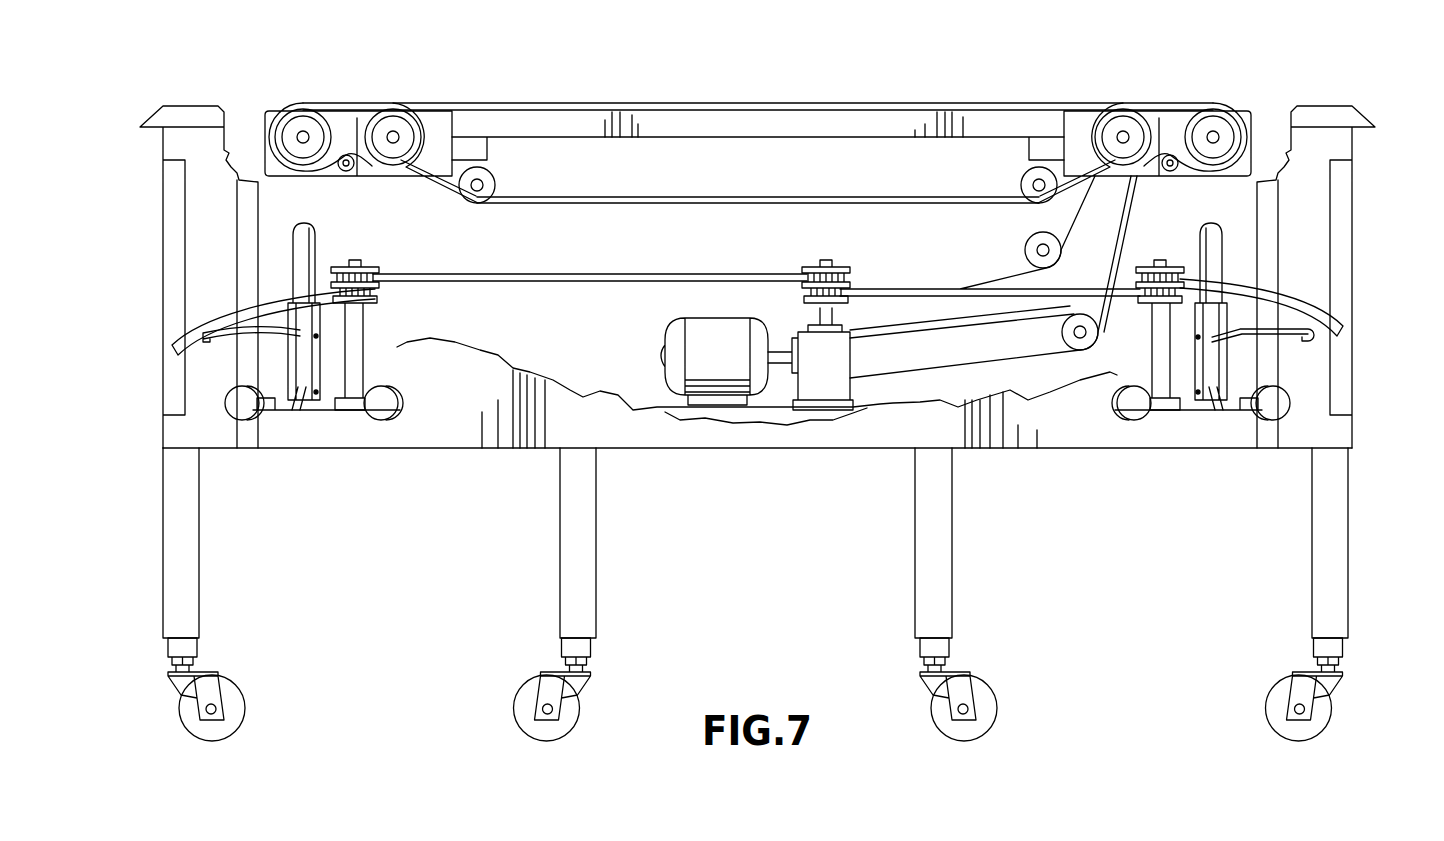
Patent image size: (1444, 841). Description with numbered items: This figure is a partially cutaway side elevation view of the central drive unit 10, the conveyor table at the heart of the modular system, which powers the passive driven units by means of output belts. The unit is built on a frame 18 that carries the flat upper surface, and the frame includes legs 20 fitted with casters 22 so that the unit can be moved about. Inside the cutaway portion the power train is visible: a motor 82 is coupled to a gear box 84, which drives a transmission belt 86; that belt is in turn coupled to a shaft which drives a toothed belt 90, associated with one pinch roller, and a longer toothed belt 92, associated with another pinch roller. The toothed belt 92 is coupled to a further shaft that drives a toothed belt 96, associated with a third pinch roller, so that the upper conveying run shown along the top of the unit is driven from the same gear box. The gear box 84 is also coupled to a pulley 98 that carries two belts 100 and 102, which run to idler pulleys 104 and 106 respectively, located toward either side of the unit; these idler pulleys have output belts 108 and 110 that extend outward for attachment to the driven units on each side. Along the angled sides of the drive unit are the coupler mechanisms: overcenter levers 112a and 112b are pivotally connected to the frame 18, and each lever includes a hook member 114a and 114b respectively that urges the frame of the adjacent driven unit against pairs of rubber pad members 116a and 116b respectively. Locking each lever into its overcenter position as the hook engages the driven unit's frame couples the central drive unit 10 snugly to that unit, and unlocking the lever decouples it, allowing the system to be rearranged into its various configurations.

The central drive unit 10 is at (1302, 72).
The frame 18 is at (1353, 445).
The legs 20 is at (199, 585).
The casters 22 is at (245, 712).
The motor 82 is at (708, 318).
The gear box 84 is at (842, 352).
The transmission belt 86 is at (960, 358).
The toothed belt 90 is at (1178, 102).
The toothed belt 92 is at (738, 102).
The toothed belt 96 is at (345, 103).
The pulley 98 is at (813, 272).
The belt 100 is at (945, 289).
The belt 102 is at (580, 273).
The idler pulley 104 is at (1141, 267).
The idler pulley 106 is at (372, 270).
The output belt 108 is at (1294, 322).
The output belt 110 is at (212, 320).
The overcenter lever 112a is at (1223, 257).
The overcenter lever 112b is at (320, 248).
The hook member 114a is at (1294, 322).
The hook member 114b is at (215, 335).
The rubber pad members 116a is at (1133, 421).
The rubber pad members 116b is at (245, 420).